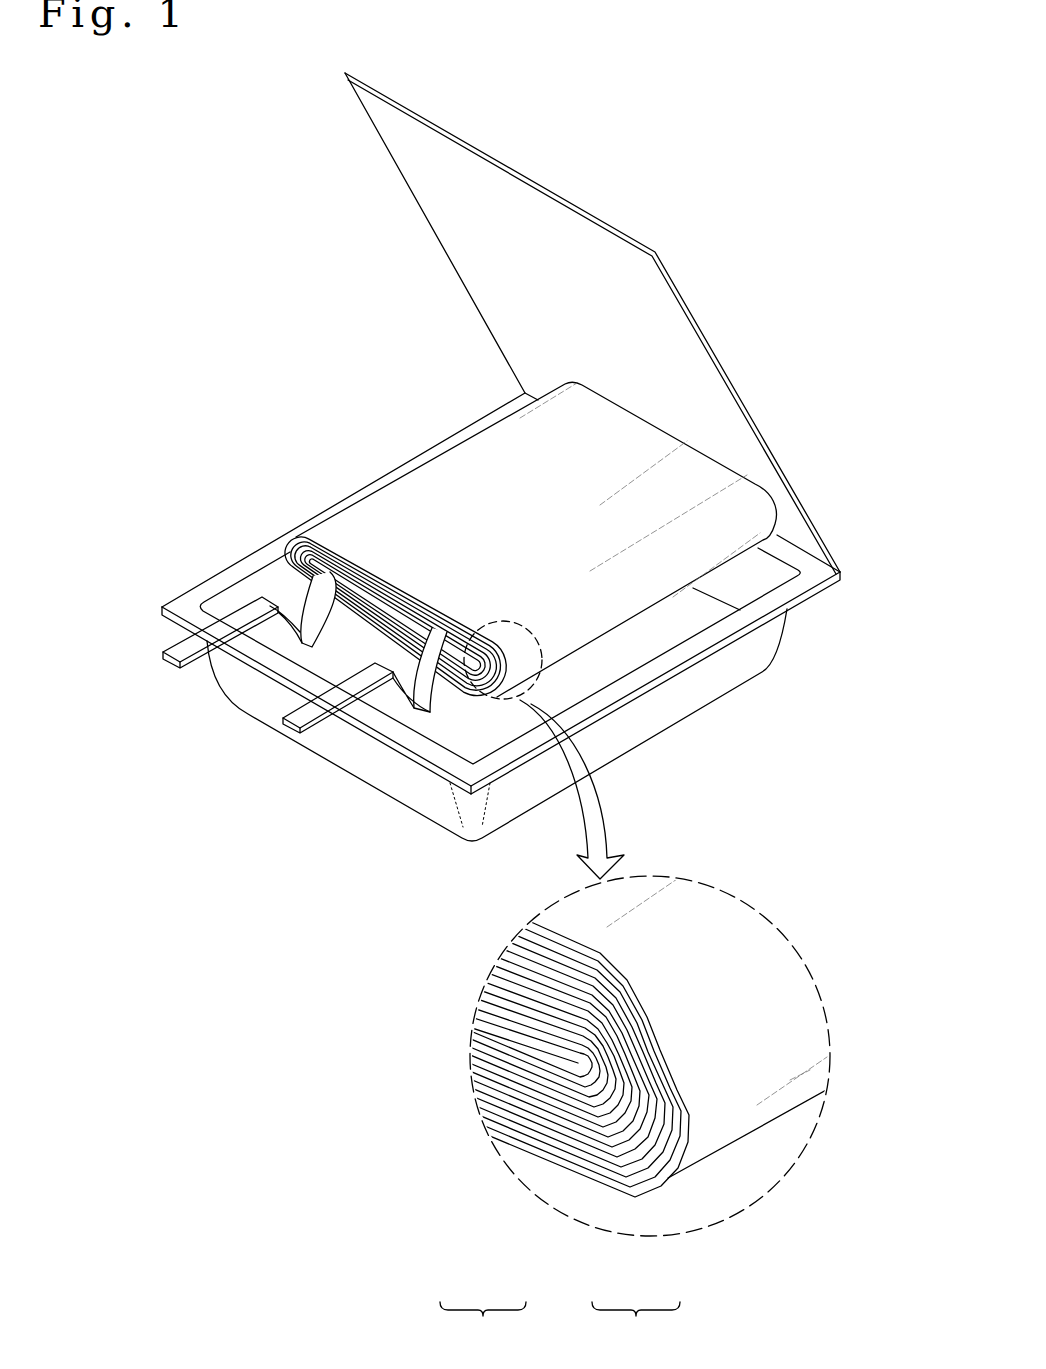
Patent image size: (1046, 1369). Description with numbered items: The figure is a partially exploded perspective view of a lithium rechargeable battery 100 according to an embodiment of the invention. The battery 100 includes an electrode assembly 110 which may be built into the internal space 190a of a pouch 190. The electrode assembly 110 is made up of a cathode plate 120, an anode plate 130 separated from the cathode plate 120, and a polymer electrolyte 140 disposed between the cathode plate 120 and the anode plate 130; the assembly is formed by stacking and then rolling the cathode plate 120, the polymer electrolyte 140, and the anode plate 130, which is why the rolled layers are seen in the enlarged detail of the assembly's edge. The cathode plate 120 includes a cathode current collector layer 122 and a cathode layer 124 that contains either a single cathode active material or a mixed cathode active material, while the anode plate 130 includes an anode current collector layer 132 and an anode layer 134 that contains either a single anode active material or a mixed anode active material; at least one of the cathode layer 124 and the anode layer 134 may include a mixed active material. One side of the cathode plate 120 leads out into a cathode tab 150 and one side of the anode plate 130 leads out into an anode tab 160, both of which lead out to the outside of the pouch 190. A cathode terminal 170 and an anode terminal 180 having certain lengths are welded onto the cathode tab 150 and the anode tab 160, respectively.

The lithium rechargeable battery 100 is at (801, 131).
The electrode assembly 110 is at (477, 470).
The cathode plate 120 is at (327, 553).
The cathode current collector layer 122 is at (492, 1128).
The cathode layer 124 is at (537, 1147).
The anode plate 130 is at (290, 571).
The anode current collector layer 132 is at (620, 1155).
The anode layer 134 is at (603, 1163).
The polymer electrolyte 140 is at (298, 552).
The cathode tab 150 is at (332, 590).
The anode tab 160 is at (432, 640).
The cathode terminal 170 is at (232, 622).
The anode terminal 180 is at (357, 684).
The pouch 190 is at (700, 683).
The internal space 190a is at (593, 677).